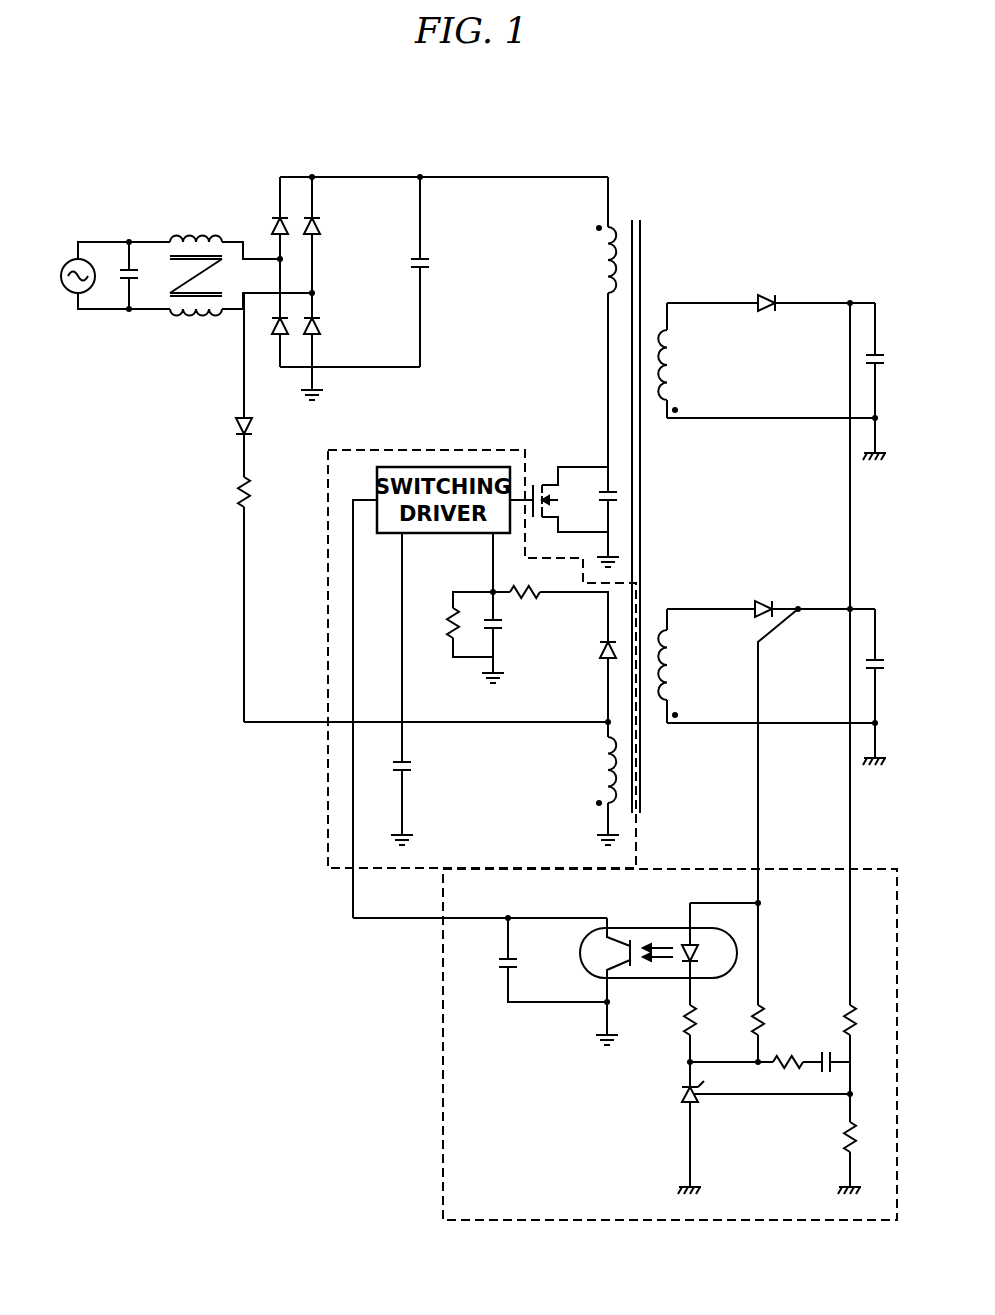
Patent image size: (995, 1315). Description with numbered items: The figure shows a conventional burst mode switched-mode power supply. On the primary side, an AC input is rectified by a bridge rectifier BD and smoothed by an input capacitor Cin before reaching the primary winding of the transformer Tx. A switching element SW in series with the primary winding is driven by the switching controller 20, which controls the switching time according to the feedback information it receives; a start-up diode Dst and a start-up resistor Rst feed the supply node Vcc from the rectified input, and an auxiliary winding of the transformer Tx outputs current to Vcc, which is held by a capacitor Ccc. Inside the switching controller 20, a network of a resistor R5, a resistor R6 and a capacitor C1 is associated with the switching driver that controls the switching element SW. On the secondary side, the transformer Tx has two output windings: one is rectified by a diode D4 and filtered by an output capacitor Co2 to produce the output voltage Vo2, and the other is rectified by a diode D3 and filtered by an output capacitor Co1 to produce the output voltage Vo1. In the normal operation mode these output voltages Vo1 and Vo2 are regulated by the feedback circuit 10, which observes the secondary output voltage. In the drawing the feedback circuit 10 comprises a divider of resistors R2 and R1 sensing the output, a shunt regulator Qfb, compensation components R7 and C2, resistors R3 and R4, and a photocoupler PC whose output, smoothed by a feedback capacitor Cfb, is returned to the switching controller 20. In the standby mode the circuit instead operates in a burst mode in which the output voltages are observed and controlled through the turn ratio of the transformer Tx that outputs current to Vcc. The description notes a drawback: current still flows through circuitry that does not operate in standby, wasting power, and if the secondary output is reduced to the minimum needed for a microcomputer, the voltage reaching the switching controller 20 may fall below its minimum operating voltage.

The bridge diode rectifier BD is at (311, 287).
The input capacitor Cin is at (441, 270).
The transformer Tx is at (637, 511).
The start-up diode Dst is at (264, 385).
The start-up resistor Rst is at (264, 599).
The switching controller 20 is at (328, 782).
The switching element SW is at (564, 517).
The resistor R5 is at (549, 602).
The resistor R6 is at (456, 624).
The capacitor C1 is at (508, 637).
The element Vcc is at (427, 711).
The supply voltage capacitor Ccc is at (426, 783).
The output diode D4 is at (771, 291).
The output voltage Vo2 is at (850, 443).
The second output capacitor Co2 is at (799, 381).
The output diode D3 is at (771, 597).
The output voltage Vo1 is at (805, 742).
The first output capacitor Co1 is at (799, 687).
The feedback circuit 10 is at (443, 1026).
The feedback capacitor Cfb is at (481, 960).
The photocoupler PC is at (670, 952).
The resistor R3 is at (706, 1046).
The resistor R4 is at (774, 984).
The resistor R2 is at (866, 865).
The resistor R7 is at (756, 1051).
The capacitor C2 is at (831, 1051).
The shunt regulator Qfb is at (739, 1137).
The resistor R1 is at (863, 1158).